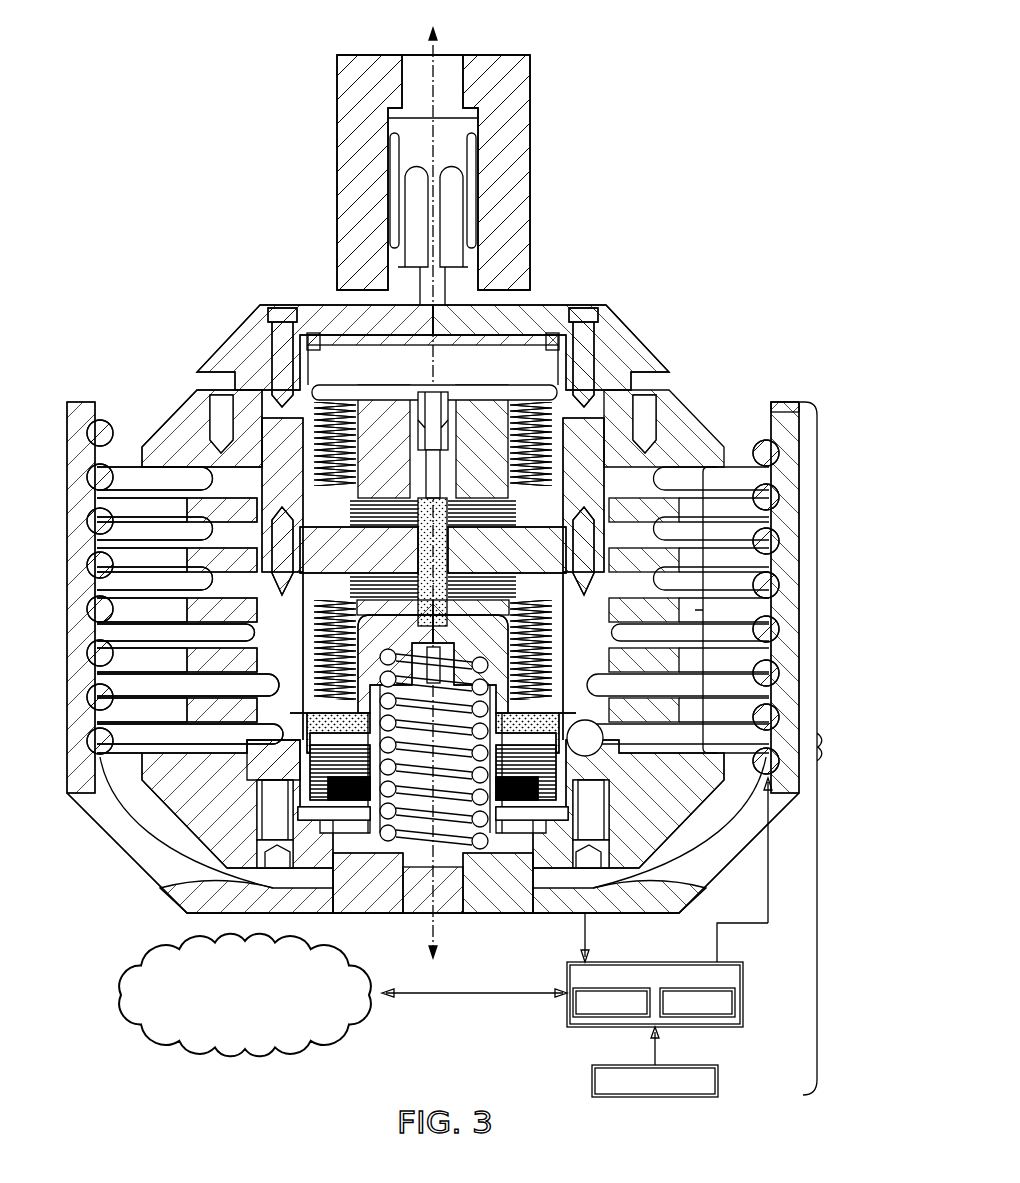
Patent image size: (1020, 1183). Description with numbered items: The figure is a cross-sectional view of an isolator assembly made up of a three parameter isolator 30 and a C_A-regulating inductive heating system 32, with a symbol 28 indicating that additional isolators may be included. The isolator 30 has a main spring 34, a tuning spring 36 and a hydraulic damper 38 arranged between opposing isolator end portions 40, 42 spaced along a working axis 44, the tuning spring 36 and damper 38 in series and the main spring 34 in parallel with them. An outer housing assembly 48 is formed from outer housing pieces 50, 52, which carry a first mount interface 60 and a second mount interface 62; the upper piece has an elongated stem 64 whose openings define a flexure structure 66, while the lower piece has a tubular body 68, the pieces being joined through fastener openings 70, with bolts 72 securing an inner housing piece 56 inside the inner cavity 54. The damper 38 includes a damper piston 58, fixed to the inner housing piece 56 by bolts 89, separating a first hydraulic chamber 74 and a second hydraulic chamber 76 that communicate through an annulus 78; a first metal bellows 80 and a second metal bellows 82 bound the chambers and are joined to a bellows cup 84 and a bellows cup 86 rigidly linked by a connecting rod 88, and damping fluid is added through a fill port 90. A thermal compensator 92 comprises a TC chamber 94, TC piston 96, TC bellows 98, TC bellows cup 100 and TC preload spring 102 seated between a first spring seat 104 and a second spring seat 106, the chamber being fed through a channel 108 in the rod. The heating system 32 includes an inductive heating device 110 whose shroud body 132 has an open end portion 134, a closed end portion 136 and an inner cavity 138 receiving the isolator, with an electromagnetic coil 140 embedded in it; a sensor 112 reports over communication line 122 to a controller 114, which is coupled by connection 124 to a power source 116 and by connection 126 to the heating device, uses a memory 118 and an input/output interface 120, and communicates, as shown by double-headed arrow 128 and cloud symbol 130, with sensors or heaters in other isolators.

The symbol 28 is at (612, 52).
The three parameter isolator 30 is at (228, 185).
The C_A-regulating inductive heating system 32 is at (828, 748).
The main spring 34 is at (706, 612).
The tuning spring 36 is at (586, 418).
The hydraulic damper 38 is at (488, 392).
The isolator end portion 40 is at (532, 55).
The isolator end portion 42 is at (505, 912).
The working axis 44 is at (428, 44).
The outer housing assembly 48 is at (648, 360).
The outer housing piece 50 is at (222, 357).
The outer housing piece 52 is at (168, 422).
The inner cavity 54 is at (433, 365).
The inner housing piece 56 is at (262, 478).
The damper piston 58 is at (352, 520).
The first mount interface 60 is at (440, 62).
The second mount interface 62 is at (440, 935).
The elongated stem 64 is at (337, 232).
The flexure structure 66 is at (563, 118).
The tubular body 68 is at (195, 608).
The fastener openings 70 is at (215, 462).
The bolts 72 is at (268, 314).
The first hydraulic chamber 74 is at (494, 510).
The second hydraulic chamber 76 is at (445, 596).
The annulus 78 is at (395, 535).
The first metal bellows 80 is at (312, 444).
The second metal bellows 82 is at (308, 668).
The bellows cup 84 is at (392, 392).
The bellows cup 86 is at (298, 748).
The connecting rod 88 is at (448, 502).
The bolts 89 is at (268, 584).
The fill port 90 is at (418, 430).
The thermal compensator 92 is at (540, 644).
The TC chamber 94 is at (312, 724).
The TC piston 96 is at (558, 722).
The TC bellows 98 is at (500, 795).
The TC bellows cup 100 is at (320, 822).
The TC preload spring 102 is at (380, 750).
The first spring seat 104 is at (366, 628).
The second spring seat 106 is at (390, 855).
The channel 108 is at (420, 568).
The inductive heating device 110 is at (67, 402).
The sensor 112 is at (604, 738).
The controller 114 is at (742, 1027).
The power source 116 is at (655, 1097).
The memory 118 is at (567, 1010).
The input/output interface 120 is at (743, 1005).
The communication line 122 is at (584, 942).
The connection 124 is at (652, 1055).
The connection 126 is at (768, 940).
The double-headed arrow 128 is at (458, 997).
The cloud symbol 130 is at (243, 1058).
The shroud body 132 is at (67, 795).
The open end portion 134 is at (792, 402).
The closed end portion 136 is at (660, 912).
The inner cavity 138 is at (763, 418).
The electromagnetic coil 140 is at (70, 608).